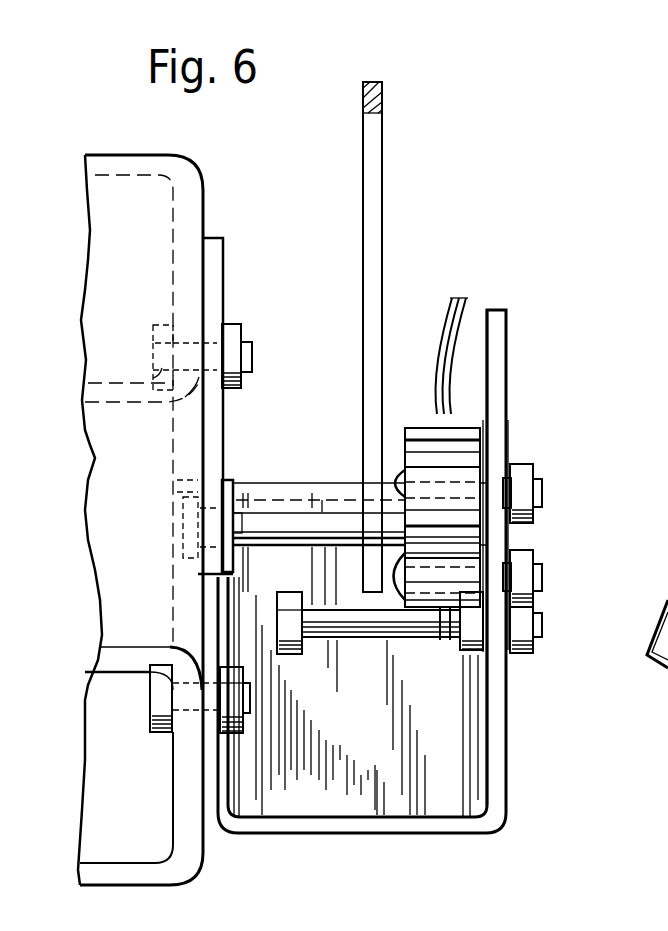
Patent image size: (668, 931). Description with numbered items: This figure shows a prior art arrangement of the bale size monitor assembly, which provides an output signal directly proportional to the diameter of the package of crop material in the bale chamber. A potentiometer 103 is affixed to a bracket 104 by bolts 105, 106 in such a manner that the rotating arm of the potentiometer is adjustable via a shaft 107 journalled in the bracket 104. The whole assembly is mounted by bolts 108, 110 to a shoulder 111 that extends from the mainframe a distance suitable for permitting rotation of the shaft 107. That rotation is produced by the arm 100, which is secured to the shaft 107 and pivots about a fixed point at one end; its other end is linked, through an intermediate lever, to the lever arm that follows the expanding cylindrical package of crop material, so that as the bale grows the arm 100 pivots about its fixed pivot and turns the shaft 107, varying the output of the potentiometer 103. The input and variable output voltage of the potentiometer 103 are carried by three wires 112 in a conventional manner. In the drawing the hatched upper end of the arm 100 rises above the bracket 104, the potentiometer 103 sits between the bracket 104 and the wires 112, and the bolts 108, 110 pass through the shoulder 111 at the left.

The arm 100 is at (376, 197).
The potentiometer 103 is at (452, 455).
The bracket 104 is at (343, 840).
The bolt 105 is at (543, 485).
The bolt 106 is at (545, 570).
The shaft 107 is at (270, 522).
The bolt 108 is at (153, 330).
The bolt 110 is at (154, 733).
The shoulder 111 is at (205, 203).
The wires 112 is at (462, 298).